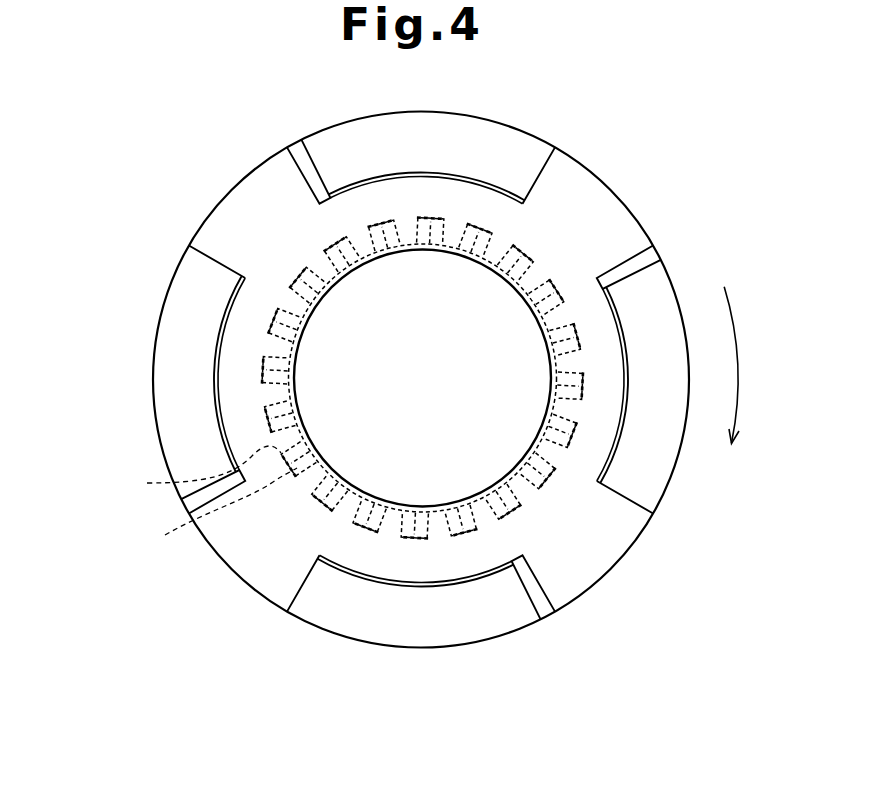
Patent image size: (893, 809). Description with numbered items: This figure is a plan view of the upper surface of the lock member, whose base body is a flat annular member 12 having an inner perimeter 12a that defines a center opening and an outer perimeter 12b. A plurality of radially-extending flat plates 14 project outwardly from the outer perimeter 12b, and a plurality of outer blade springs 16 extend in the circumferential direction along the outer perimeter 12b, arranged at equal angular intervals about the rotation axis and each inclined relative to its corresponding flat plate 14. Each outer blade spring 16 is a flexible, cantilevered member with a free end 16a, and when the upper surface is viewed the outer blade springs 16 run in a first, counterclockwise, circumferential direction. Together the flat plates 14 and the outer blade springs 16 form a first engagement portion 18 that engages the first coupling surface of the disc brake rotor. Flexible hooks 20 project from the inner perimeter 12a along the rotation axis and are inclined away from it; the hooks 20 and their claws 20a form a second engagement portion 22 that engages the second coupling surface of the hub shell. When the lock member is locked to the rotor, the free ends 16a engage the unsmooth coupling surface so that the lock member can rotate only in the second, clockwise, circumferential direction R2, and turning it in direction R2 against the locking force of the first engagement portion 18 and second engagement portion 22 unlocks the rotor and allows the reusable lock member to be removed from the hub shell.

The annular member 12 is at (422, 387).
The inner perimeter 12a is at (355, 490).
The outer perimeter 12b is at (347, 580).
The radially-extending flat plates 14 is at (622, 547).
The outer blade springs 16 is at (658, 492).
The free end 16a is at (650, 262).
The first engagement portion 18 is at (461, 380).
The flexible hooks 20 is at (198, 472).
The claws 20a is at (113, 467).
The second engagement portion 22 is at (180, 499).
The second circumferential direction R2 is at (737, 357).